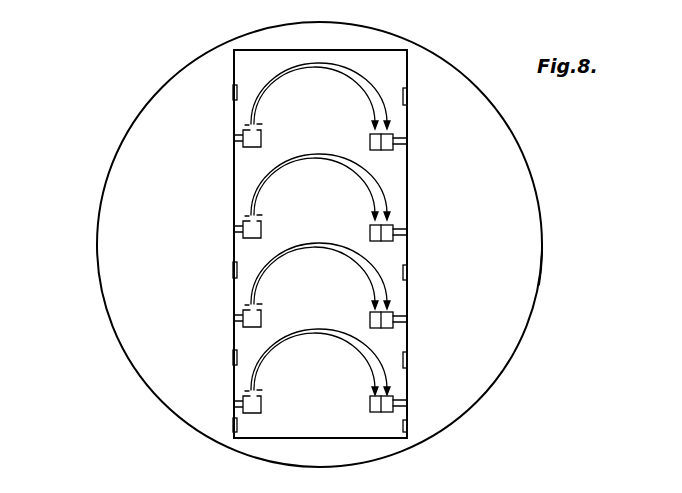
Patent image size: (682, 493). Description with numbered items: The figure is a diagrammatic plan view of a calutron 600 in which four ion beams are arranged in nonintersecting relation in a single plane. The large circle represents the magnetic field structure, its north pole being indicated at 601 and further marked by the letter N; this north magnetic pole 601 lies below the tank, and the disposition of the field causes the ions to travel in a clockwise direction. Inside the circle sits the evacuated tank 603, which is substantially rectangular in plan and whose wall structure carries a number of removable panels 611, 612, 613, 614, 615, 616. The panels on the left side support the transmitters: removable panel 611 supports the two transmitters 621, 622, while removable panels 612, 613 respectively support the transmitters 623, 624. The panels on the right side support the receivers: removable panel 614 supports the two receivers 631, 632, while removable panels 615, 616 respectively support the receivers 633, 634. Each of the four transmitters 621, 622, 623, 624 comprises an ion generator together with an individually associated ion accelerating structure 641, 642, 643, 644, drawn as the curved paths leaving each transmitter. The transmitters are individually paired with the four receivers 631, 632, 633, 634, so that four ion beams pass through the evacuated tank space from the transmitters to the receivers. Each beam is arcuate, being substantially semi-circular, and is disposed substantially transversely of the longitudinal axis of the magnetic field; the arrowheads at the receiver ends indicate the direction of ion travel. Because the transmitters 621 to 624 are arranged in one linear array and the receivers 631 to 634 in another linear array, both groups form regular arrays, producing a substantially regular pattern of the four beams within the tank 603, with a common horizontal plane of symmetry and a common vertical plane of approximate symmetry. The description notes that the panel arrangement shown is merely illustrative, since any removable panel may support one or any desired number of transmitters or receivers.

The calutron 600 is at (152, 53).
The north pole of the magnetic field structure 601 is at (109, 243).
The display periphery N is at (525, 247).
The evacuated tank 603 is at (386, 50).
The removable panel 611 is at (234, 165).
The removable panel 612 is at (234, 273).
The removable panel 613 is at (234, 362).
The removable panel 614 is at (408, 200).
The removable panel 615 is at (408, 282).
The removable panel 616 is at (408, 366).
The transmitter 621 is at (245, 143).
The transmitter 622 is at (243, 233).
The transmitter 623 is at (243, 326).
The transmitter 624 is at (243, 406).
The receiver 631 is at (408, 148).
The receiver 632 is at (408, 236).
The receiver 633 is at (408, 321).
The receiver 634 is at (408, 403).
The ion accelerating structure 641 is at (250, 124).
The ion accelerating structure 642 is at (247, 215).
The ion accelerating structure 643 is at (248, 304).
The ion accelerating structure 644 is at (248, 391).